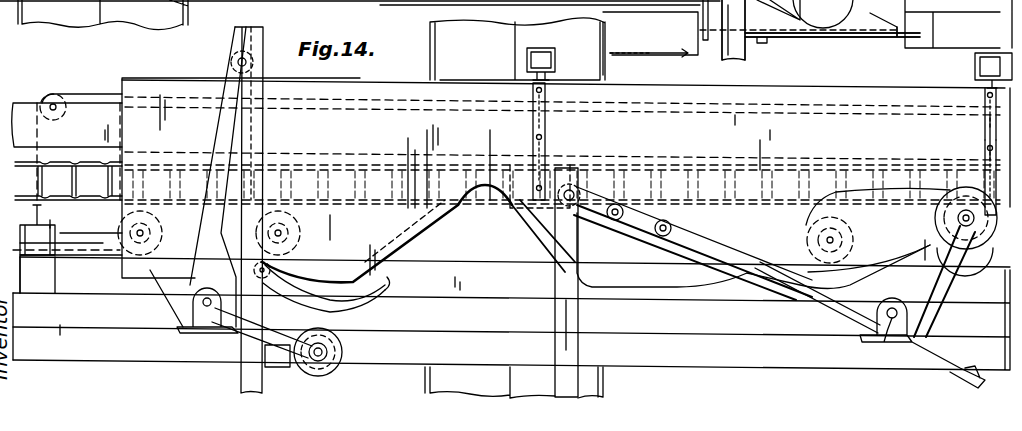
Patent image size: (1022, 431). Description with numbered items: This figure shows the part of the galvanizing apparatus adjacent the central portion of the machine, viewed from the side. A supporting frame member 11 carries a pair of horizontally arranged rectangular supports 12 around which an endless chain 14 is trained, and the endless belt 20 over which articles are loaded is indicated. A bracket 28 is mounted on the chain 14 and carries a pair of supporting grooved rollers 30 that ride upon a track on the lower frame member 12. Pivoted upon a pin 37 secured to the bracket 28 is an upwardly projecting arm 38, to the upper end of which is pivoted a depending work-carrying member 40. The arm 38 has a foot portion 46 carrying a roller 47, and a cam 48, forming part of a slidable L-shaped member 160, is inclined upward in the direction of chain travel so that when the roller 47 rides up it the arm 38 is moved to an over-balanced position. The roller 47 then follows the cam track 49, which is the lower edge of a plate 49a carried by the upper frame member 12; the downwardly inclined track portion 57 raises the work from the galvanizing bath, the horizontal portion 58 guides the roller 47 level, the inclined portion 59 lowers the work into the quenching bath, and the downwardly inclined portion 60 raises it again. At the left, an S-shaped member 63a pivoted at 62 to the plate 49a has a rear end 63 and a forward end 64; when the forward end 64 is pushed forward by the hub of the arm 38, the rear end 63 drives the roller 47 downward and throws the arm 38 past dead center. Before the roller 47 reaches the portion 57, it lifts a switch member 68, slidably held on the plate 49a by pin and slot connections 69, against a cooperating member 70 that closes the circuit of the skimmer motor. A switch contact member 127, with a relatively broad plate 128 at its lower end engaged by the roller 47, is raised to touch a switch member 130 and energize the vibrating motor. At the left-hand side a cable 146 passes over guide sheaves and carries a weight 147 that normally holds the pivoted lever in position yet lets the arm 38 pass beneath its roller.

The supporting frame member 11 is at (476, 64).
The horizontally arranged support 12 is at (20, 112).
The endless chain 14 is at (50, 167).
The endless belt 20 is at (649, 44).
The bracket 28 is at (173, 303).
The supporting grooved roller 30 is at (117, 243).
The pin 37 is at (190, 335).
The upwardly projecting arm 38 is at (230, 75).
The work-carrying member 40 is at (258, 135).
The foot portion 46 is at (337, 378).
The roller 47 is at (350, 350).
The cam 48 is at (842, 25).
The cam track 49 is at (122, 290).
The plate 49a is at (143, 90).
The downwardly inclined track portion 57 is at (790, 248).
The horizontal portion 58 is at (683, 287).
The inclined portion 59 is at (577, 238).
The downwardly inclined portion 60 is at (420, 232).
The pivot 62 is at (305, 251).
The rear end 63 is at (363, 313).
The S-shaped member 63a is at (397, 292).
The forward end 64 is at (157, 232).
The switch member 68 is at (985, 153).
The pin and slot connection 69 is at (983, 107).
The cooperating member 70 is at (980, 84).
The switch contact member 127 is at (548, 108).
The plate 128 is at (545, 187).
The switch member 130 is at (553, 75).
The cable 146 is at (103, 75).
The weight 147 is at (45, 243).
The L-shaped member 160 is at (748, 36).